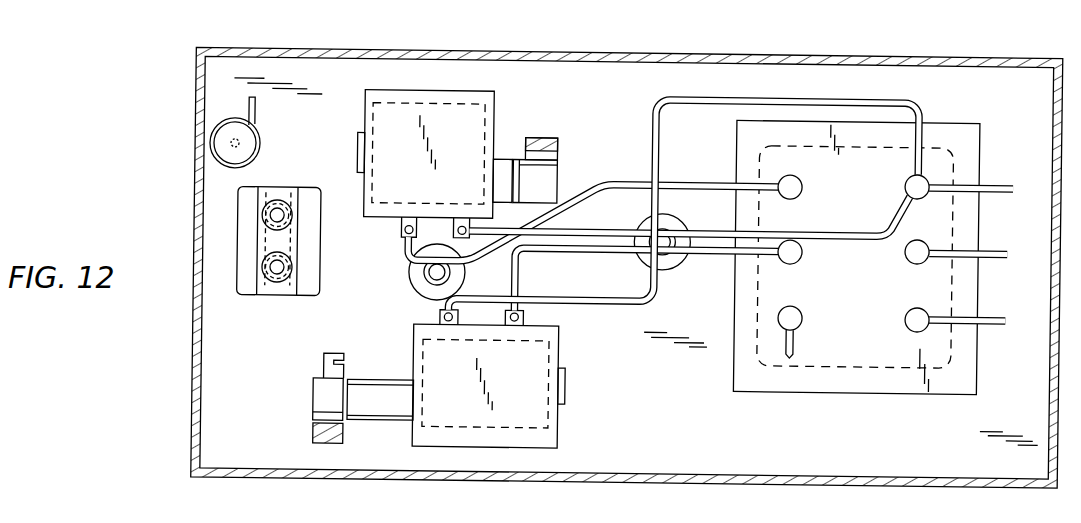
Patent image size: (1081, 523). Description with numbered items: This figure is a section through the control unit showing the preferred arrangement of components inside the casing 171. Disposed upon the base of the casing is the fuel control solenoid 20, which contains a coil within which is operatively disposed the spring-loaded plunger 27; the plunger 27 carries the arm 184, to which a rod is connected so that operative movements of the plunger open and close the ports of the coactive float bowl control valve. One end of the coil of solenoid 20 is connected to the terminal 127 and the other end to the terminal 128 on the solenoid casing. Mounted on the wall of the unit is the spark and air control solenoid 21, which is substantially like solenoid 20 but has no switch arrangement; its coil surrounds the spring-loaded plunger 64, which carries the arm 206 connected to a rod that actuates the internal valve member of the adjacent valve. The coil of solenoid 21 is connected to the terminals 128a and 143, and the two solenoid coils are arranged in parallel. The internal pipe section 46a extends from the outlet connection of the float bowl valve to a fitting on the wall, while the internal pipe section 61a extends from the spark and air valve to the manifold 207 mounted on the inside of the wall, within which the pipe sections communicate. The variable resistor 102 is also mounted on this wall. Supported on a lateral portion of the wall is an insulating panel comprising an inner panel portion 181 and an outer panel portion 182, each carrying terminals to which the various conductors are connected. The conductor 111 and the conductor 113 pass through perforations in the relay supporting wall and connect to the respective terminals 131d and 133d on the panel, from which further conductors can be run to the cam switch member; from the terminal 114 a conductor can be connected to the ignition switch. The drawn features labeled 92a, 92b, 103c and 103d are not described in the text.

The casing 171 is at (690, 52).
The variable resistor 102 is at (216, 142).
The manifold 207 is at (299, 218).
The internal pipe section 46a is at (291, 218).
The internal pipe section 61a is at (292, 270).
The spark and air control solenoid 21 is at (449, 156).
The arm 206 is at (556, 141).
The plunger 64 is at (552, 183).
The terminal 128a is at (435, 216).
The terminal 143 is at (401, 233).
The terminal 128 is at (441, 320).
The terminal 127 is at (525, 319).
The fuel control solenoid 20 is at (495, 377).
The plunger 27 is at (315, 399).
The arm 184 is at (315, 439).
The terminal 131d is at (801, 185).
The terminal 133d is at (802, 250).
The port 92a is at (803, 315).
The pin 92b is at (794, 333).
The port 103c is at (906, 326).
The terminal 114 is at (911, 259).
The conductor 111 is at (994, 188).
The conductor 113 is at (993, 253).
The outlet pipe 103d is at (996, 322).
The inner panel portion 181 is at (883, 250).
The outer panel portion 182 is at (952, 163).